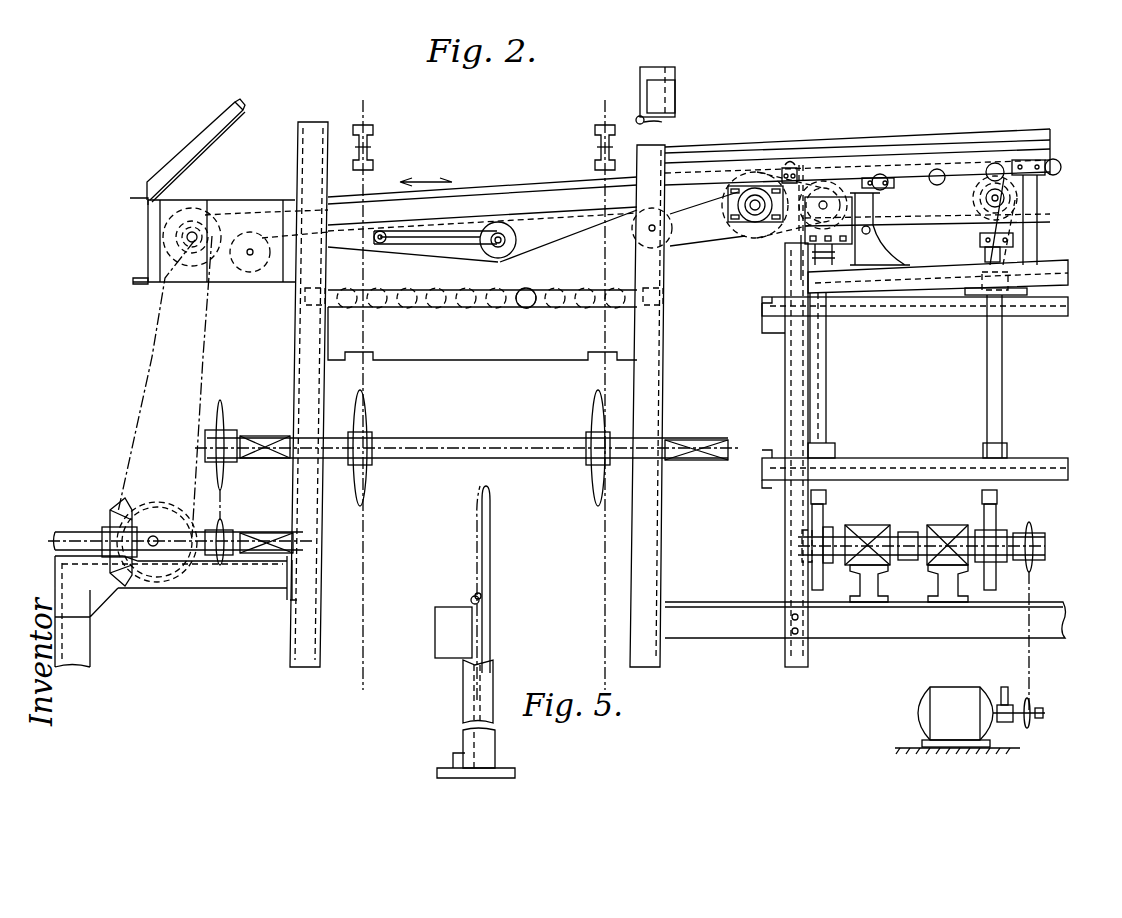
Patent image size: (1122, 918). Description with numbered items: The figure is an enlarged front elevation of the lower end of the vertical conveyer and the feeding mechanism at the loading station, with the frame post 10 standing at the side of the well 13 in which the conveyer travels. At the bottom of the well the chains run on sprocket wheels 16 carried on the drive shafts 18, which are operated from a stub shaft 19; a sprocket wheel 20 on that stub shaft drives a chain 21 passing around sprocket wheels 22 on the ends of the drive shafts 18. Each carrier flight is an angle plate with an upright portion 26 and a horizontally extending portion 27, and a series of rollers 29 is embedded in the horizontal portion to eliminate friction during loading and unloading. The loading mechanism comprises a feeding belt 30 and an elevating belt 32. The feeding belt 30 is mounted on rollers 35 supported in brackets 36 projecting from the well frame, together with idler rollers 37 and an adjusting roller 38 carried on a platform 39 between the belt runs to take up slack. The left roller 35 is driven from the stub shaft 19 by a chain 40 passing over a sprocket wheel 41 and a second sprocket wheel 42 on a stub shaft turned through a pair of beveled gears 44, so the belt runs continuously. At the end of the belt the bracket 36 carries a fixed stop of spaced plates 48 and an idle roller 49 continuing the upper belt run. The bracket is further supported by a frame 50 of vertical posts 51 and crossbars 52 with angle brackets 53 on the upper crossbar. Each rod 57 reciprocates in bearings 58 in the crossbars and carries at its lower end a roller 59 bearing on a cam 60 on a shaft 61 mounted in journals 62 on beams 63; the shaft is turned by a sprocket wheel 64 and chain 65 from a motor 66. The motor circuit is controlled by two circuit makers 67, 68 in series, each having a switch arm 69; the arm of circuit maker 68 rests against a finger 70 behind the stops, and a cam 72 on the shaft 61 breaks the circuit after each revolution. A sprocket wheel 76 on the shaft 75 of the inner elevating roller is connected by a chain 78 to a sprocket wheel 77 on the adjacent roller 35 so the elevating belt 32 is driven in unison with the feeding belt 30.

In FIG. 2, the frame post 10 is at (298, 347).
In FIG. 2, the well 13 is at (314, 150).
In FIG. 2, the sprocket wheels 16 is at (366, 500).
In FIG. 2, the drive shafts 18 is at (437, 450).
In FIG. 2, the stub shaft 19 is at (203, 556).
In FIG. 2, the sprocket wheel 20 is at (226, 535).
In FIG. 2, the chain 21 is at (224, 500).
In FIG. 2, the sprocket wheels 22 is at (226, 420).
In FIG. 2, the upright portion 26 is at (482, 333).
In FIG. 2, the horizontally extending portion 27 is at (528, 296).
In FIG. 2, the rollers 29 is at (414, 290).
In FIG. 2, the feeding belt 30 is at (490, 186).
In FIG. 2, the elevating belt 32 is at (905, 190).
In FIG. 2, the rollers 35 is at (200, 210).
In FIG. 2, the brackets 36 is at (212, 284).
In FIG. 2, the idler rollers 37 is at (256, 272).
In FIG. 2, the adjusting roller 38 is at (516, 242).
In FIG. 2, the platform 39 is at (482, 228).
In FIG. 2, the chain 40 is at (157, 325).
In FIG. 2, the sprocket wheel 41 is at (150, 250).
In FIG. 2, the sprocket wheel 42 is at (140, 506).
In FIG. 2, the beveled gears 44 is at (112, 520).
In FIG. 2, the stop plates 48 is at (797, 182).
In FIG. 2, the idle roller 49 is at (790, 164).
In FIG. 2, the frame 50 is at (825, 410).
In FIG. 2, the vertical posts 51 is at (785, 408).
In FIG. 5, the vertical posts 51 is at (463, 740).
In FIG. 2, the crossbars 52 is at (878, 308).
In FIG. 2, the angle brackets 53 is at (1020, 240).
In FIG. 2, the rod 57 is at (828, 362).
In FIG. 2, the bearings 58 is at (835, 448).
In FIG. 2, the roller 59 is at (828, 504).
In FIG. 2, the cam 60 is at (823, 582).
In FIG. 2, the shaft 61 is at (1030, 535).
In FIG. 2, the journals 62 is at (870, 527).
In FIG. 2, the beams 63 is at (942, 592).
In FIG. 2, the sprocket wheel 64 is at (1035, 532).
In FIG. 2, the chain 65 is at (1032, 590).
In FIG. 2, the motor 66 is at (960, 690).
In FIG. 2, the circuit maker 67 is at (680, 80).
In FIG. 2, the circuit maker 68 is at (762, 312).
In FIG. 5, the circuit maker 68 is at (453, 632).
In FIG. 2, the switch arm 69 is at (663, 122).
In FIG. 5, the switch arm 69 is at (482, 600).
In FIG. 2, the finger 70 is at (815, 200).
In FIG. 5, the finger 70 is at (492, 522).
In FIG. 2, the cam 72 is at (910, 534).
In FIG. 2, the shaft 75 is at (790, 230).
In FIG. 2, the sprocket wheel 76 is at (875, 210).
In FIG. 2, the sprocket wheel 77 is at (801, 165).
In FIG. 2, the chain 78 is at (826, 200).